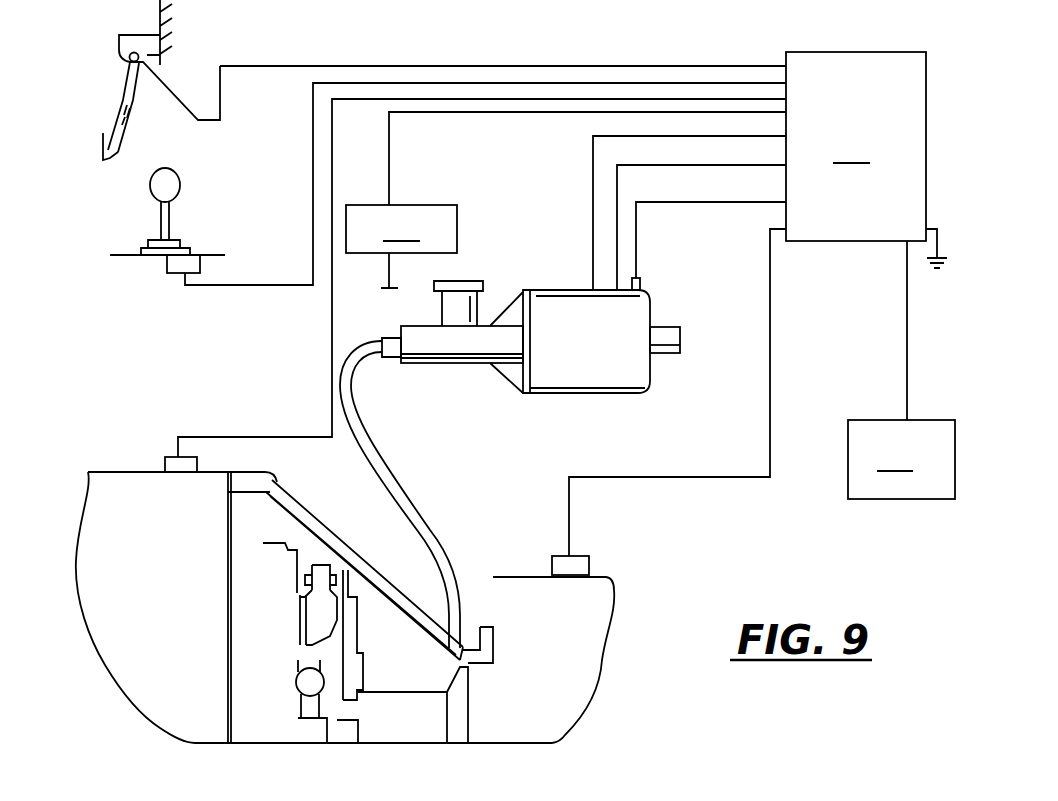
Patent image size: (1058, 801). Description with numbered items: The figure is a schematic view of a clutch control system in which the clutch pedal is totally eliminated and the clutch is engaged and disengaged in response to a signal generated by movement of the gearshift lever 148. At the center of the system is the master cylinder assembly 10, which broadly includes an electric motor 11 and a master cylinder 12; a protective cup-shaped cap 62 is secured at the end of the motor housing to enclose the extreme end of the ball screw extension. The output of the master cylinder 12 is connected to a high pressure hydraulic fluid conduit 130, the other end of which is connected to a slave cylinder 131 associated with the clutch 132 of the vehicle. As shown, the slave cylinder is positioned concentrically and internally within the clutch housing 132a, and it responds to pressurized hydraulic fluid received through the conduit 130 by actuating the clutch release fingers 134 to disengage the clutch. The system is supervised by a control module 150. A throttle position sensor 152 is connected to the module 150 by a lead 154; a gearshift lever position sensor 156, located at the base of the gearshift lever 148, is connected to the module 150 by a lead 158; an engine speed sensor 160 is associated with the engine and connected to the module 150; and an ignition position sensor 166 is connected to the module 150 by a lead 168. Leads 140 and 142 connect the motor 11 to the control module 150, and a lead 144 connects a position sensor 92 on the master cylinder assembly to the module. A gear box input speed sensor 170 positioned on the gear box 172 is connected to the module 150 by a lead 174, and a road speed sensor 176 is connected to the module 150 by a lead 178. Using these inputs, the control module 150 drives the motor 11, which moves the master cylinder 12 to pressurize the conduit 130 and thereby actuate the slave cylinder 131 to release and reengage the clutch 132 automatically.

The master cylinder assembly 10 is at (501, 339).
The electric motor 11 is at (578, 402).
The master cylinder 12 is at (428, 313).
The cap 62 is at (682, 338).
The position sensor 92 is at (641, 283).
The hydraulic fluid conduit 130 is at (388, 478).
The slave cylinder 131 is at (433, 718).
The clutch 132 is at (283, 661).
The clutch housing 132a is at (375, 565).
The clutch release fingers 134 is at (355, 678).
The lead 140 is at (593, 185).
The lead 142 is at (733, 165).
The lead 144 is at (675, 205).
The gearshift lever 148 is at (160, 217).
The control module 150 is at (866, 160).
The throttle position sensor 152 is at (130, 44).
The lead 154 is at (530, 65).
The gearshift lever position sensor 156 is at (178, 275).
The lead 158 is at (313, 190).
The engine speed sensor 160 is at (165, 462).
The ignition position sensor 166 is at (401, 246).
The lead 168 is at (518, 112).
The gear box input speed sensor 170 is at (552, 562).
The gear box 172 is at (596, 606).
The lead 174 is at (770, 357).
The road speed sensor 176 is at (901, 459).
The lead 178 is at (907, 358).